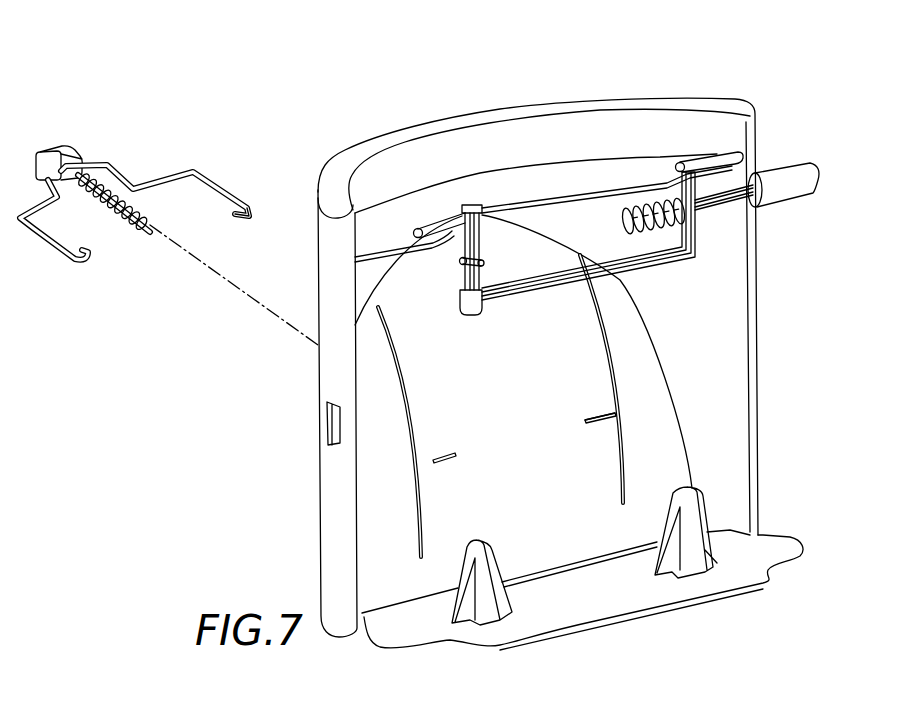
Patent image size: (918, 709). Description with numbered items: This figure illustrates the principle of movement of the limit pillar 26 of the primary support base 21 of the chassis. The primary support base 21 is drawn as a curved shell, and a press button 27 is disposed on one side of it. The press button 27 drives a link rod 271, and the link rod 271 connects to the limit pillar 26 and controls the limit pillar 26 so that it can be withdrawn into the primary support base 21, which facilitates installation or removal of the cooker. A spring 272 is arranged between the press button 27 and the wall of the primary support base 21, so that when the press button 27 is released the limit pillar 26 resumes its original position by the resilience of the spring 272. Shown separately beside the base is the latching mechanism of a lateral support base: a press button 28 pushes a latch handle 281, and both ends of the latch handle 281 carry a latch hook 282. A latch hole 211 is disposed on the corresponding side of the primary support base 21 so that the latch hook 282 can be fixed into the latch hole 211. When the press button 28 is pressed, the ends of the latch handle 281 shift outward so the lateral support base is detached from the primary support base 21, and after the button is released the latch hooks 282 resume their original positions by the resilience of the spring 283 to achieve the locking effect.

The primary support base 21 is at (333, 552).
The latch hole 211 is at (606, 416).
The limit pillar 26 is at (717, 157).
The press button 27 is at (807, 175).
The link rod 271 is at (723, 203).
The spring 272 is at (647, 202).
The press button 28 is at (58, 146).
The latch handle 281 is at (163, 180).
The latch hook 282 is at (238, 225).
The spring 283 is at (145, 235).